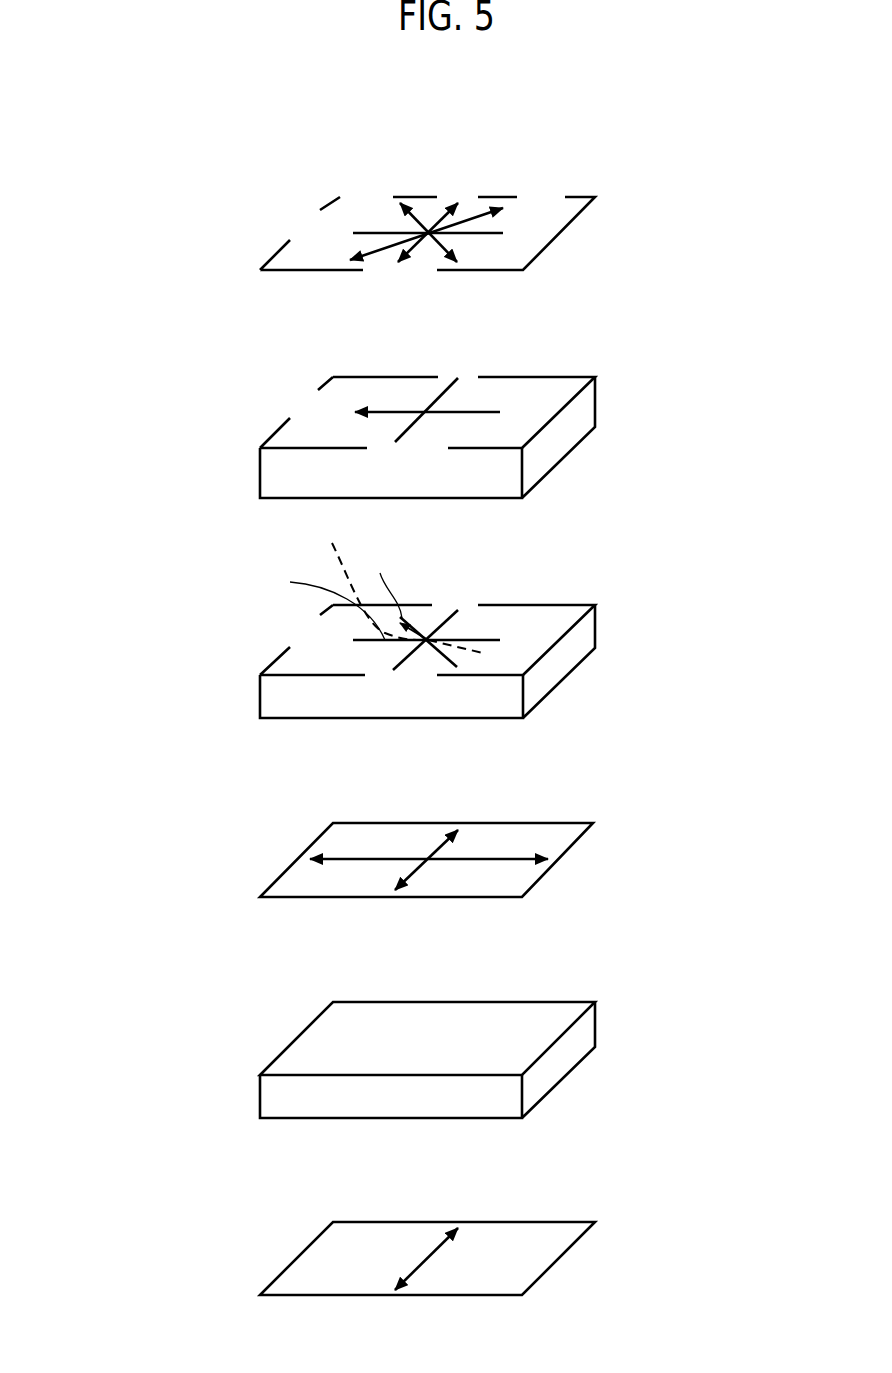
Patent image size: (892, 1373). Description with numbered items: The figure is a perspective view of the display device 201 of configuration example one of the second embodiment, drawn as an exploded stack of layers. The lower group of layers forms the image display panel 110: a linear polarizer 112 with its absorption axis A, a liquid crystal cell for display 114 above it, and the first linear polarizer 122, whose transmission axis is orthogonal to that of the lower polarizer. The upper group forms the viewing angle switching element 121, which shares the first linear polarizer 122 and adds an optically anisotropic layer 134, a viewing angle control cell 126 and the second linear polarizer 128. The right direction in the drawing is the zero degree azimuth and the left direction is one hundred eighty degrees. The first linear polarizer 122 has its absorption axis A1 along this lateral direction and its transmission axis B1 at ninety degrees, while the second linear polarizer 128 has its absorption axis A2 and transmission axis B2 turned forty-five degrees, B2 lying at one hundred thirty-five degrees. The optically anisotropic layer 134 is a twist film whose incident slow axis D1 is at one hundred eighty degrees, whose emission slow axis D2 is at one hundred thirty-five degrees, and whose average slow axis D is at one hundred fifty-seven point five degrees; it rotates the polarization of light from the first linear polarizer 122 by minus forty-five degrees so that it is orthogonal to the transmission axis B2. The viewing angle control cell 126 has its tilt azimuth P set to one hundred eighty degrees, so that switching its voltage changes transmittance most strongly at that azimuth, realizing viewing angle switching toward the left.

The display device 201 is at (197, 153).
The viewing angle switching element 121 is at (708, 123).
The image display panel 110 is at (709, 786).
The second linear polarizer 128 is at (565, 197).
The viewing angle control cell 126 is at (565, 375).
The optically anisotropic layer 134 is at (565, 603).
The first linear polarizer 122 is at (565, 823).
The liquid crystal cell for display 114 is at (565, 1002).
The linear polarizer 112 is at (565, 1222).
The absorption axis A2 is at (485, 217).
The transmission axis B2 is at (422, 222).
The tilt azimuth P is at (380, 417).
The average slow axis D is at (404, 582).
The incident slow axis D1 is at (405, 625).
The emission slow axis D2 is at (368, 642).
The transmission axis B1 is at (437, 857).
The absorption axis A1 is at (377, 860).
The absorption axis A is at (427, 1262).